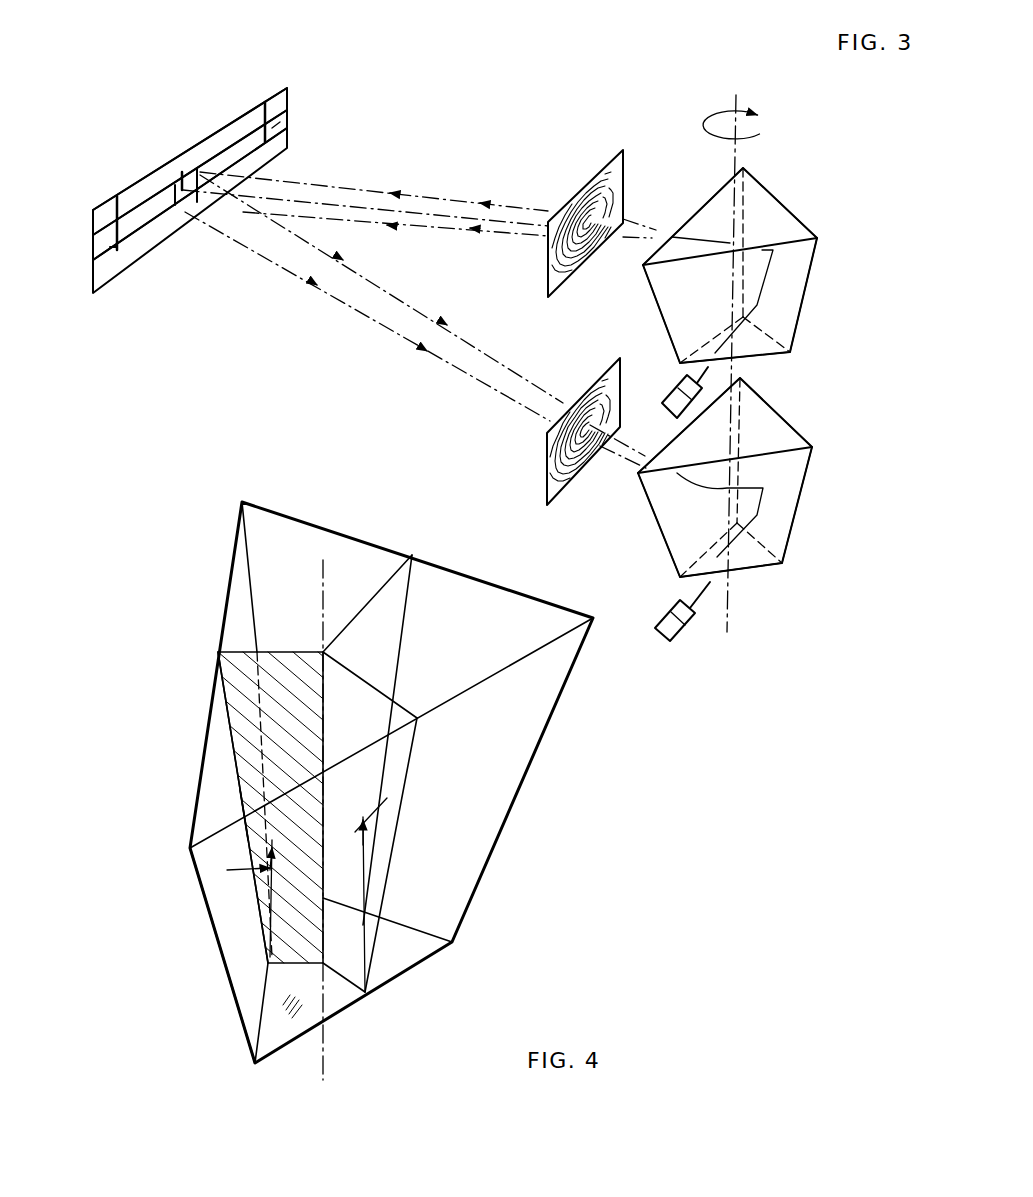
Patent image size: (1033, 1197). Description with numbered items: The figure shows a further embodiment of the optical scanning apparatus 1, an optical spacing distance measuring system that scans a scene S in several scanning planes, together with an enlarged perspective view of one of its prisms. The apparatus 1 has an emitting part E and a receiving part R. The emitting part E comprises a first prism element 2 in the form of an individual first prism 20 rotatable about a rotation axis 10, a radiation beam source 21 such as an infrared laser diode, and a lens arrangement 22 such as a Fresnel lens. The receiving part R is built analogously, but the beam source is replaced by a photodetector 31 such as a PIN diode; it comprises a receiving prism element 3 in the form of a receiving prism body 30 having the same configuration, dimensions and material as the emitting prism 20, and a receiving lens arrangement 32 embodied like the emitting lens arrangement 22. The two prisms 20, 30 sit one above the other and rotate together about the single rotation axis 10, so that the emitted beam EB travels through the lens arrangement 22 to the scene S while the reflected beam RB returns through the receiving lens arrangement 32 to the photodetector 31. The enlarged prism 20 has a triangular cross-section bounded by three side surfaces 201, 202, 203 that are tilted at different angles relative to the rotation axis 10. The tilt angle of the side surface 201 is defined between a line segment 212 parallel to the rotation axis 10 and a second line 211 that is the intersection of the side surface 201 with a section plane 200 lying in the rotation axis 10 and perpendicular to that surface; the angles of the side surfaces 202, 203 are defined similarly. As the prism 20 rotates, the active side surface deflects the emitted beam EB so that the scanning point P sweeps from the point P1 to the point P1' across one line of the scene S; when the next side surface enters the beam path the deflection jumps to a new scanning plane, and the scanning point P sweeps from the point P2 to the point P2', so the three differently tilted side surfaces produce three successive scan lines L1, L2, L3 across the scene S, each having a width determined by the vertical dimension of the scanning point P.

In FIG. 3, the optical scanning apparatus 1 is at (646, 128).
In FIG. 3, the first prism element 2 is at (827, 287).
In FIG. 3, the receiving prism element 3 is at (809, 505).
In FIG. 3, the rotation axis 10 is at (738, 158).
In FIG. 4, the rotation axis 10 is at (323, 1062).
In FIG. 3, the first prism 20 is at (782, 212).
In FIG. 4, the first prism 20 is at (484, 556).
In FIG. 3, the radiation beam source 21 is at (666, 392).
In FIG. 3, the lens arrangement 22 is at (548, 270).
In FIG. 3, the receiving prism body 30 is at (785, 428).
In FIG. 3, the photodetector 31 is at (662, 616).
In FIG. 3, the receiving lens arrangement 32 is at (547, 469).
In FIG. 4, the section plane 200 is at (243, 688).
In FIG. 4, the side surface 201 is at (240, 942).
In FIG. 4, the side surface 202 is at (293, 1000).
In FIG. 4, the side surface 203 is at (526, 719).
In FIG. 4, the second line 211 is at (231, 755).
In FIG. 4, the line segment 212 is at (247, 832).
In FIG. 3, the scene S is at (148, 262).
In FIG. 3, the scanning point P is at (182, 190).
In FIG. 3, the point P1 is at (80, 216).
In FIG. 3, the point P2 is at (80, 255).
In FIG. 3, the point P1' is at (246, 97).
In FIG. 3, the point P2' is at (347, 104).
In FIG. 3, the scan line L1 is at (288, 84).
In FIG. 3, the scan line L2 is at (290, 110).
In FIG. 3, the scan line L3 is at (290, 134).
In FIG. 3, the emitted beam EB is at (414, 196).
In FIG. 3, the reflected beam RB is at (372, 309).
In FIG. 3, the emitting part E is at (830, 217).
In FIG. 3, the receiving part R is at (750, 589).